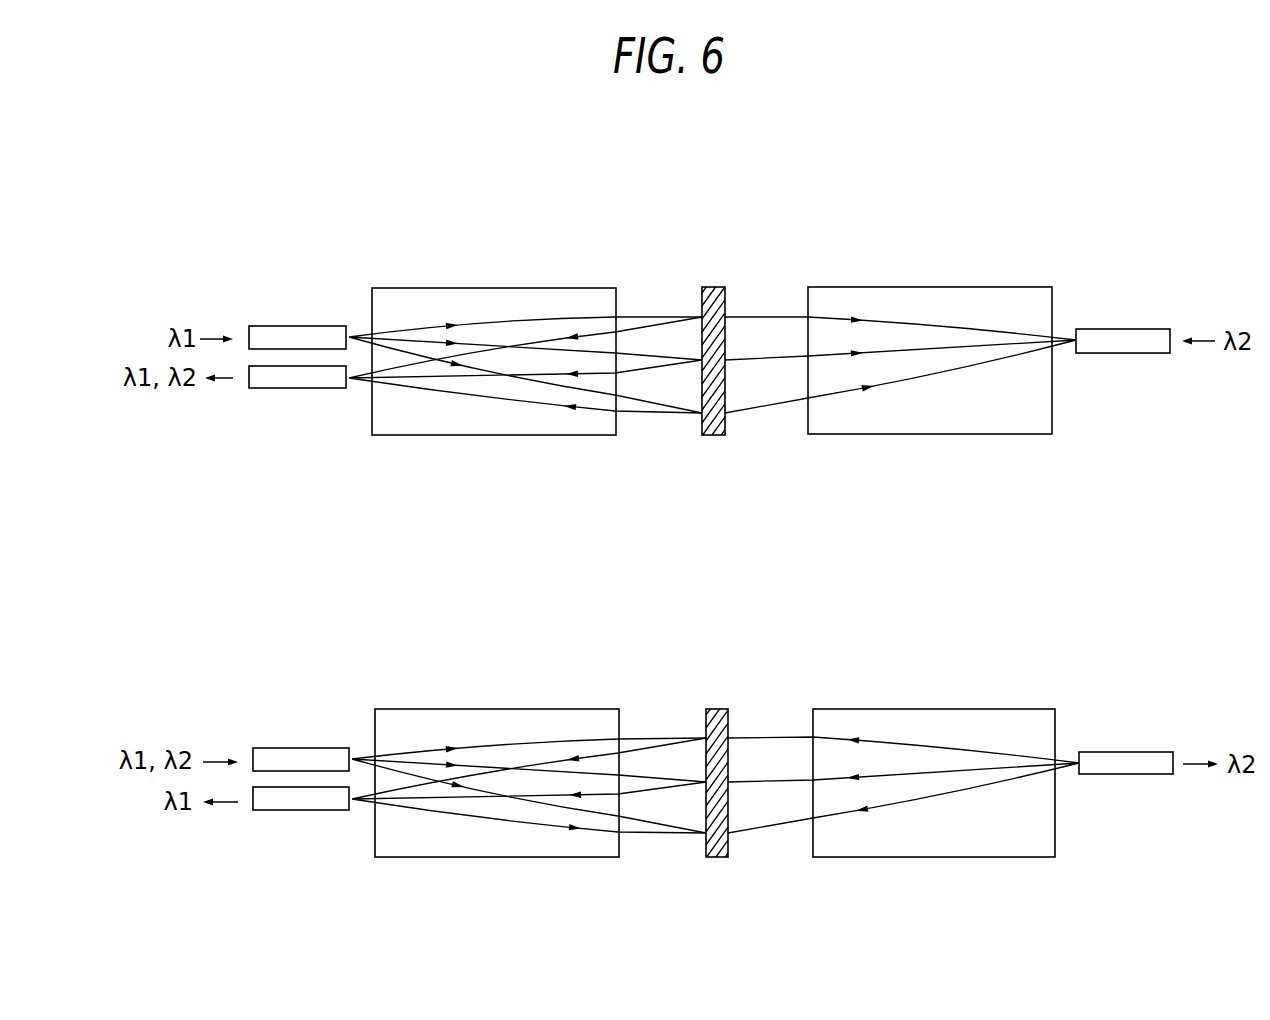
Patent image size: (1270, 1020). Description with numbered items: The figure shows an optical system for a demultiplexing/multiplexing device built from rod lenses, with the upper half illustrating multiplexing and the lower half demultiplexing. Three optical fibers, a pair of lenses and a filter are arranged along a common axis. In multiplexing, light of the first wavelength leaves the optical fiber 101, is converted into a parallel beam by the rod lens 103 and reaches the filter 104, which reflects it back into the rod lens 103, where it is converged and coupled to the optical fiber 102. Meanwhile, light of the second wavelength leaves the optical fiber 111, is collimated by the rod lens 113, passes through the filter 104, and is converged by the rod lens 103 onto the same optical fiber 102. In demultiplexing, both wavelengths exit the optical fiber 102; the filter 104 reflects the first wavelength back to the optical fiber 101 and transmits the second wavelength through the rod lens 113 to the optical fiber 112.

The optical fiber 101 is at (293, 328).
The optical fiber 102 is at (293, 390).
The rod lens 103 is at (495, 296).
The filter 104 is at (717, 287).
The optical fiber 111 is at (1113, 337).
The optical fiber 112 is at (1117, 758).
The rod lens 113 is at (1002, 300).